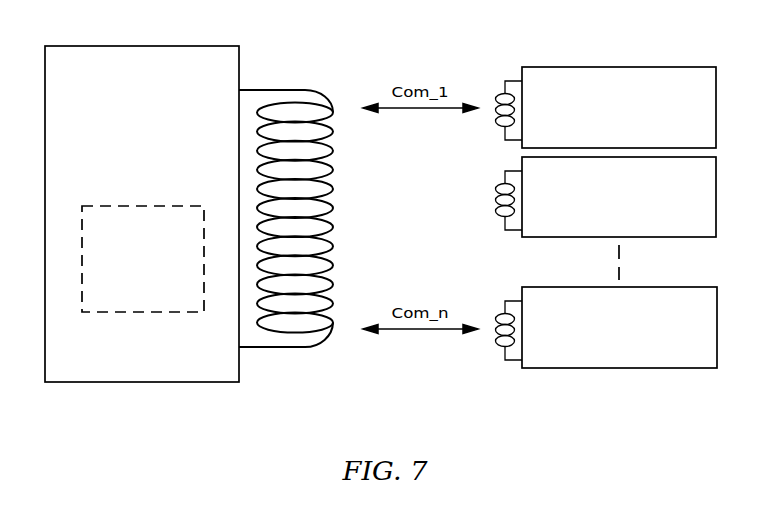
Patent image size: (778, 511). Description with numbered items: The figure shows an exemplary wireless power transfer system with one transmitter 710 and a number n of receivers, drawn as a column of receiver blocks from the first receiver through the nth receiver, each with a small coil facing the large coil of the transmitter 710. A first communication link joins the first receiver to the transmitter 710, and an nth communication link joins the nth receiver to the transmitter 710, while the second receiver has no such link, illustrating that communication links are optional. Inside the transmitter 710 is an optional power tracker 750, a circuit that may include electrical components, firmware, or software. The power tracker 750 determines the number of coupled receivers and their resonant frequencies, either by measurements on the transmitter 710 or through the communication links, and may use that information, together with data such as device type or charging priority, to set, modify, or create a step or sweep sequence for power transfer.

The transmitter 710 is at (142, 214).
The power tracker 750 is at (143, 259).